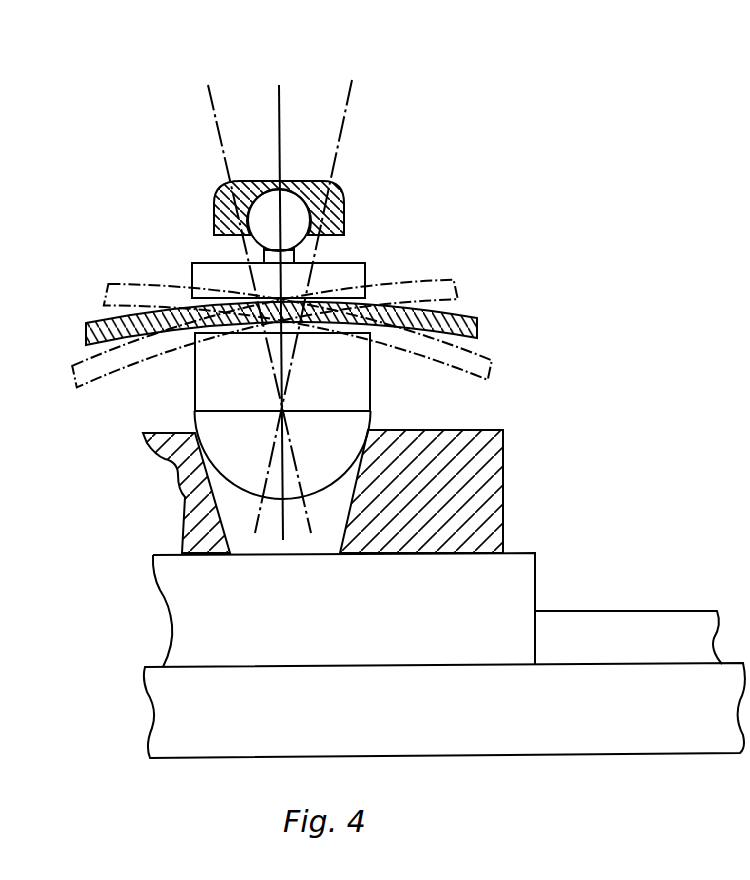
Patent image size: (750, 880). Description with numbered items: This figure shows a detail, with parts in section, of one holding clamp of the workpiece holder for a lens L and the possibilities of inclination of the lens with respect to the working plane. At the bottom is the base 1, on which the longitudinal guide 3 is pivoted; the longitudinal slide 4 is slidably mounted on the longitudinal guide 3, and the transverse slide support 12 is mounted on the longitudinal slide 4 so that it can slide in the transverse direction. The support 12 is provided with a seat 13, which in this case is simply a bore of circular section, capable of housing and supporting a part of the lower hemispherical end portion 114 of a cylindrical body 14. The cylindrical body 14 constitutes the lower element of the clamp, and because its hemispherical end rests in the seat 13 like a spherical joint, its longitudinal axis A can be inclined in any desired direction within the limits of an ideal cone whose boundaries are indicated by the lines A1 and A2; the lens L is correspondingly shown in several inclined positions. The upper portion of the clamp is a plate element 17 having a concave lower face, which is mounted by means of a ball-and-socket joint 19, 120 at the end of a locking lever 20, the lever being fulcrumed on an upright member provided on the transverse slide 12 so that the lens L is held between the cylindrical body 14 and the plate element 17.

The base 1 is at (587, 740).
The longitudinal guide 3 is at (688, 613).
The longitudinal slide 4 is at (528, 588).
The transverse slide support 12 is at (495, 492).
The seat 13 is at (218, 515).
The cylindrical body 14 is at (366, 381).
The lower hemispherical end portion 114 is at (315, 475).
The plate element 17 is at (364, 268).
The ball-and-socket joint 19 is at (260, 212).
The locking lever 20 is at (340, 197).
The ball-and-socket joint 120 is at (338, 222).
The lens L is at (133, 287).
The longitudinal axis A is at (275, 294).
The ideal cone limit A1 is at (247, 291).
The ideal cone limit A2 is at (318, 288).